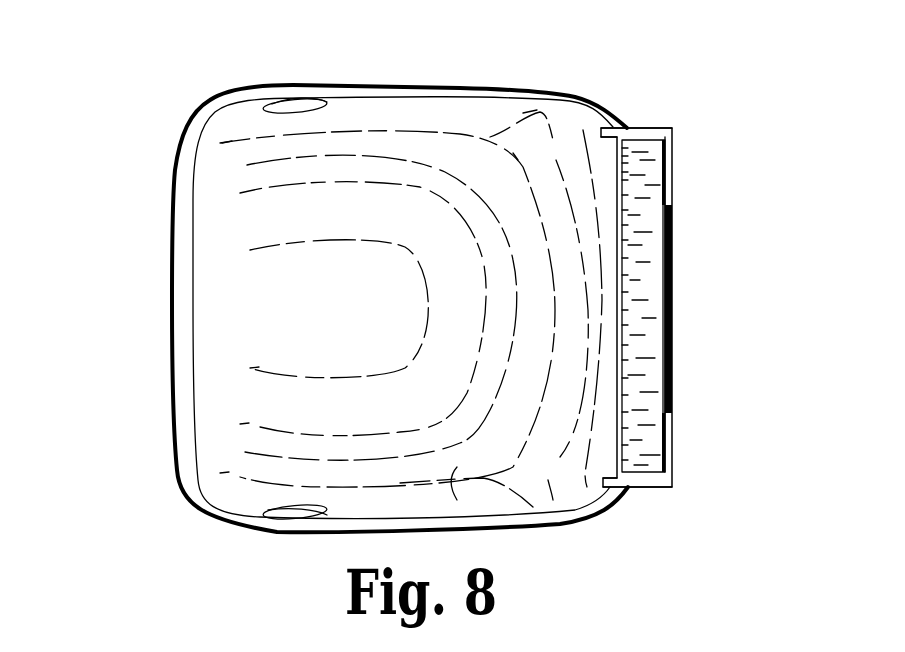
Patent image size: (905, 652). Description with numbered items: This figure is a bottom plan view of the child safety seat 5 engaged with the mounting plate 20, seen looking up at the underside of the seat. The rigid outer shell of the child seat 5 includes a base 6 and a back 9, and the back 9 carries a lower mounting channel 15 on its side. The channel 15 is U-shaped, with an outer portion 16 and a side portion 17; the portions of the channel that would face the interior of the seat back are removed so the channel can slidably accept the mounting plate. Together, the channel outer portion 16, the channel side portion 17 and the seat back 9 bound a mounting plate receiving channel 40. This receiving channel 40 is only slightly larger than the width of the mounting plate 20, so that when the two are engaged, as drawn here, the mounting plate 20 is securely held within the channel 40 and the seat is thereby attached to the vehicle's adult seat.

The child safety seat 5 is at (152, 48).
The base 6 is at (270, 302).
The back 9 is at (618, 348).
The lower mounting channel 15 is at (677, 121).
The outer portion 16 is at (672, 173).
The side portion 17 is at (633, 128).
The mounting plate 20 is at (655, 270).
The mounting plate receiving channel 40 is at (648, 142).